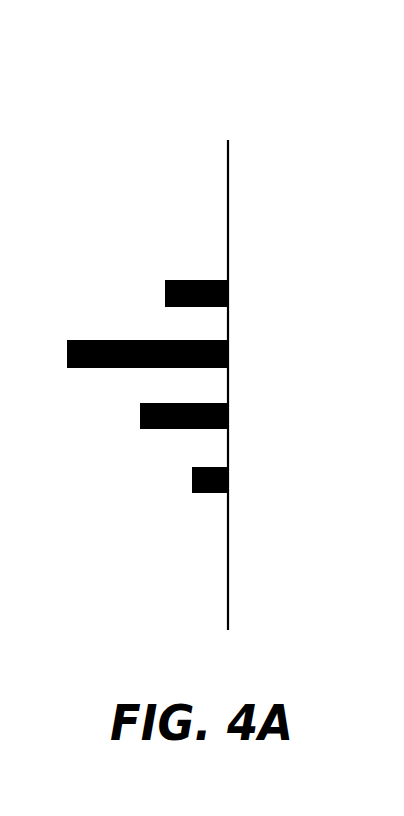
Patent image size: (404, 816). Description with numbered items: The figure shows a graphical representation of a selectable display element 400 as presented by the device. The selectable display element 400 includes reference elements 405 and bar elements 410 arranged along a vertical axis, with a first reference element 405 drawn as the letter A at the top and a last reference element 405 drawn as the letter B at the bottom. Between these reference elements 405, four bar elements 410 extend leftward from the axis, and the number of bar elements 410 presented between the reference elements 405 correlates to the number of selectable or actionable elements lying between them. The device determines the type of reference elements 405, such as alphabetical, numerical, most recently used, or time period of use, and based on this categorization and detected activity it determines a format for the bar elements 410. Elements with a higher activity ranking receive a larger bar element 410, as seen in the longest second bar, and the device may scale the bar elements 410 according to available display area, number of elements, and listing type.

The selectable display element 400 is at (184, 89).
The reference elements 405 is at (200, 195).
The bar elements 410 is at (228, 294).